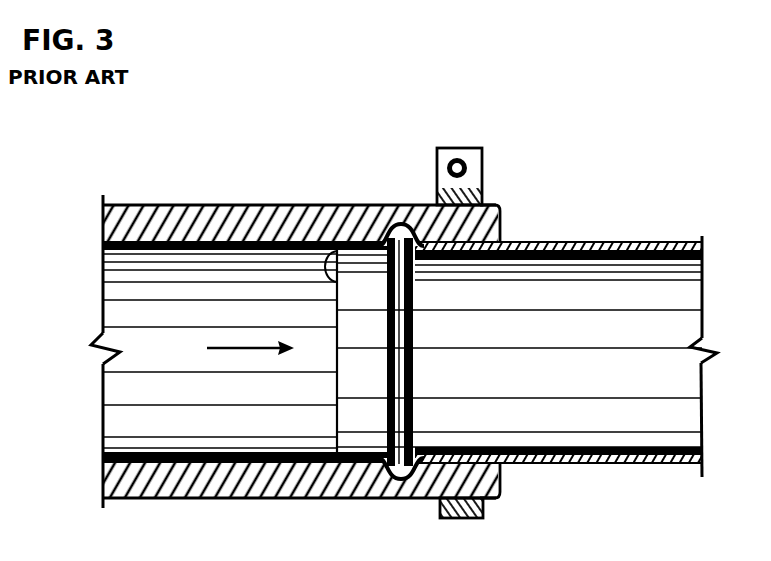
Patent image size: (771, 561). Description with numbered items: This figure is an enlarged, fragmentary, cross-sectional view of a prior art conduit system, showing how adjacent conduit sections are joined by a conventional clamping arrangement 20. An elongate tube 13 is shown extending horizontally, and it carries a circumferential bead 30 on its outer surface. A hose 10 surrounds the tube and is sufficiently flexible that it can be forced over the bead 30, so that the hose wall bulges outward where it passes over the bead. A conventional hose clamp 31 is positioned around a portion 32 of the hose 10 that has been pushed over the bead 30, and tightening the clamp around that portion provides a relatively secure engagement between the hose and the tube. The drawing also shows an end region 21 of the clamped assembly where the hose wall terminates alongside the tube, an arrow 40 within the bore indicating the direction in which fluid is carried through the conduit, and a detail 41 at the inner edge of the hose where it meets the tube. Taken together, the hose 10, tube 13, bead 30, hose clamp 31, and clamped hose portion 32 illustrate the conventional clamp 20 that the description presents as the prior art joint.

The hose 10 is at (302, 204).
The elongate tube 13 is at (592, 240).
The clamping arrangement 20 is at (432, 125).
The coupling end / flange 21 is at (513, 218).
The circumferential bead 30 is at (417, 433).
The hose clamp 31 is at (483, 172).
The portion of hose 32 is at (492, 498).
The flow direction arrow 40 is at (233, 352).
The rounded inner edge of outer pipe 41 is at (328, 268).